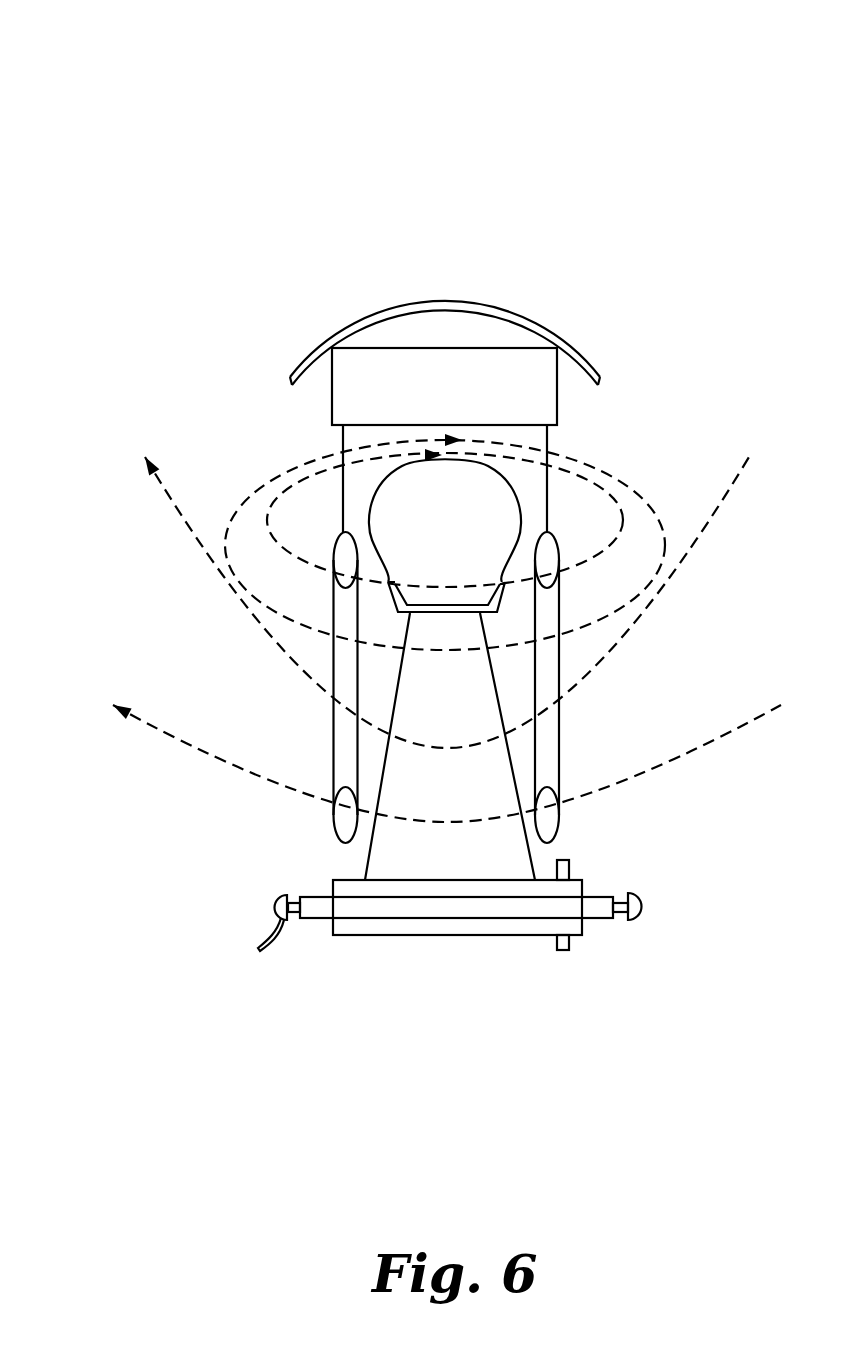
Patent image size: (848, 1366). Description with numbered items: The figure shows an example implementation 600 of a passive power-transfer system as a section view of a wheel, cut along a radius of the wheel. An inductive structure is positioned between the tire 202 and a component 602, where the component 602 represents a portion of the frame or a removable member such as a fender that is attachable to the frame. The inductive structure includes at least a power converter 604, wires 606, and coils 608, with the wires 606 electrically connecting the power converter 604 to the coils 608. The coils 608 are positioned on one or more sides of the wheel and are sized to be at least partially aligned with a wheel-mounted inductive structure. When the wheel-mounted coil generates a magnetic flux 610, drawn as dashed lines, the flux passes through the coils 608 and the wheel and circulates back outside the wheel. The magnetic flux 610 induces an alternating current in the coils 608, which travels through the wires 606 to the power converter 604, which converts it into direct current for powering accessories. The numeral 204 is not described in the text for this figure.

The passive power-transfer system implementation 600 is at (128, 62).
The component 602 is at (380, 313).
The power converter 604 is at (333, 383).
The wires 606 is at (345, 497).
The coils 608 is at (556, 548).
The magnetic flux 610 is at (255, 512).
The tire 202 is at (508, 565).
The socket 204 is at (477, 605).